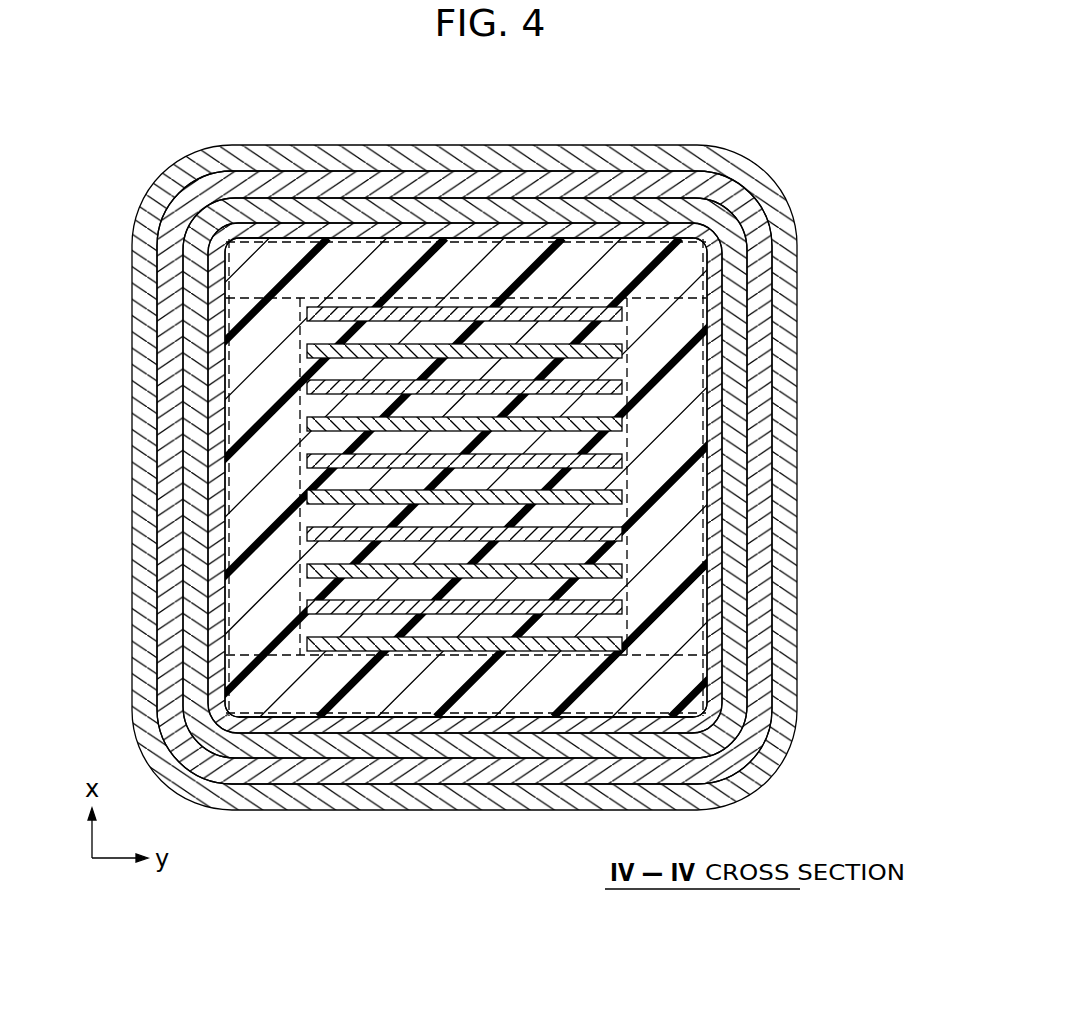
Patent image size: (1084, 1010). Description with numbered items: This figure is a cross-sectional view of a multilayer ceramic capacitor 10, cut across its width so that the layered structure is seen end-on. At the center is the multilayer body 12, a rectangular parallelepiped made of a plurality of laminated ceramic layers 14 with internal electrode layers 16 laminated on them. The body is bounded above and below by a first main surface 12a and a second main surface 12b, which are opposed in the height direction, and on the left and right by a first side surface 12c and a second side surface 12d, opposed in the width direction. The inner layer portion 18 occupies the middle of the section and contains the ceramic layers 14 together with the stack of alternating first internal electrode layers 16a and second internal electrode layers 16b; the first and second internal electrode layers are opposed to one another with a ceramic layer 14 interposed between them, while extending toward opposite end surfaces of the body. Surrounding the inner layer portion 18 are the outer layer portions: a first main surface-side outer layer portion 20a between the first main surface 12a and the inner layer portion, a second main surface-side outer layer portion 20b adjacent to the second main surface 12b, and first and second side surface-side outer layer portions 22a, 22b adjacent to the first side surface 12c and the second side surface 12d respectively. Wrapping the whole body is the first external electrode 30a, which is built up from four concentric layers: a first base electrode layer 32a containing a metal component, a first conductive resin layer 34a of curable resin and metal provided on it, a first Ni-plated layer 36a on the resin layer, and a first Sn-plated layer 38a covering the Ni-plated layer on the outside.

The multilayer ceramic capacitor 10 is at (208, 111).
The multilayer body 12 is at (542, 508).
The first main surface 12a is at (318, 240).
The second main surface 12b is at (417, 717).
The first side surface 12c is at (300, 502).
The second side surface 12d is at (627, 512).
The ceramic layer 14 is at (495, 405).
The internal electrode layer 16 is at (467, 629).
The first internal electrode layer 16a is at (310, 467).
The second internal electrode layer 16b is at (608, 423).
The inner layer portion 18 is at (603, 551).
The first main surface-side outer layer portion 20a is at (617, 244).
The second main surface-side outer layer portion 20b is at (296, 700).
The first side surface-side outer layer portion 22a is at (245, 460).
The second side surface-side outer layer portion 22b is at (690, 443).
The first external electrode 30a is at (536, 477).
The first base electrode layer 32a is at (866, 367).
The first conductive resin layer 34a is at (733, 278).
The first Ni-plated layer 36a is at (757, 312).
The first Sn-plated layer 38a is at (782, 350).